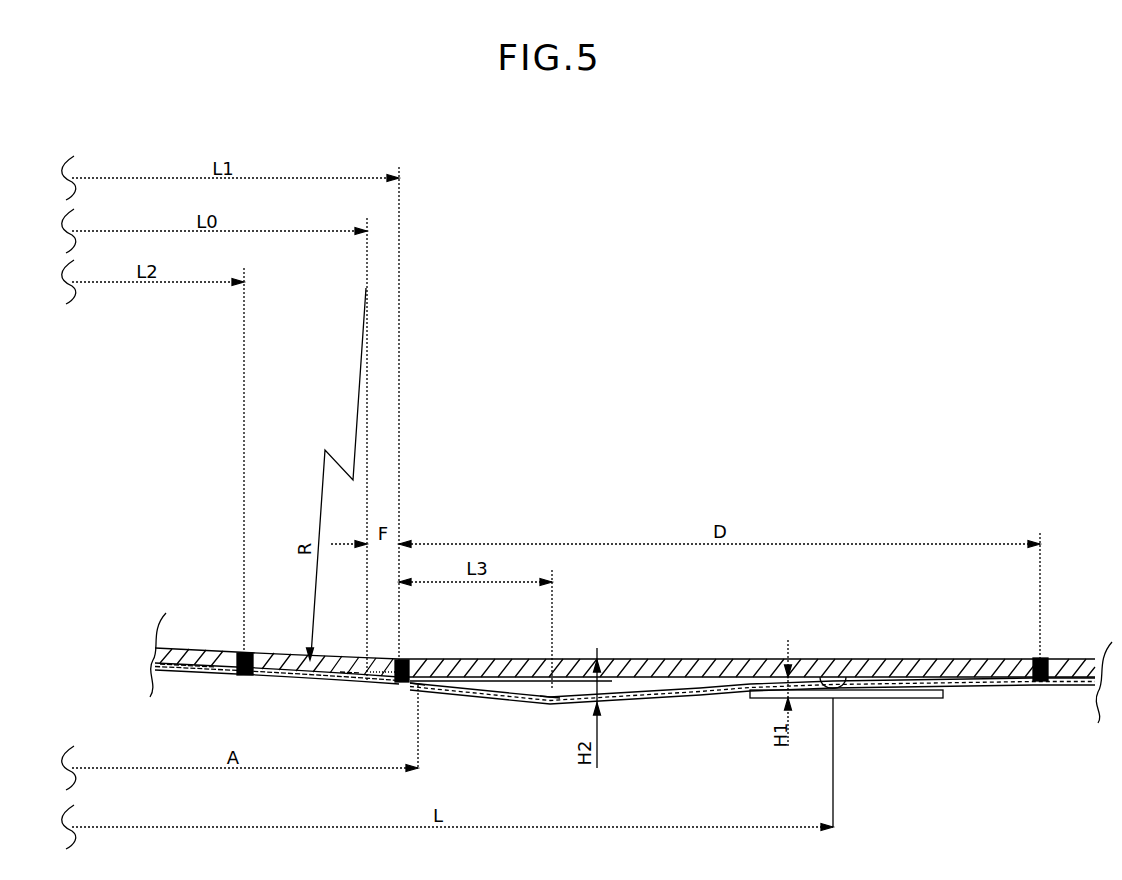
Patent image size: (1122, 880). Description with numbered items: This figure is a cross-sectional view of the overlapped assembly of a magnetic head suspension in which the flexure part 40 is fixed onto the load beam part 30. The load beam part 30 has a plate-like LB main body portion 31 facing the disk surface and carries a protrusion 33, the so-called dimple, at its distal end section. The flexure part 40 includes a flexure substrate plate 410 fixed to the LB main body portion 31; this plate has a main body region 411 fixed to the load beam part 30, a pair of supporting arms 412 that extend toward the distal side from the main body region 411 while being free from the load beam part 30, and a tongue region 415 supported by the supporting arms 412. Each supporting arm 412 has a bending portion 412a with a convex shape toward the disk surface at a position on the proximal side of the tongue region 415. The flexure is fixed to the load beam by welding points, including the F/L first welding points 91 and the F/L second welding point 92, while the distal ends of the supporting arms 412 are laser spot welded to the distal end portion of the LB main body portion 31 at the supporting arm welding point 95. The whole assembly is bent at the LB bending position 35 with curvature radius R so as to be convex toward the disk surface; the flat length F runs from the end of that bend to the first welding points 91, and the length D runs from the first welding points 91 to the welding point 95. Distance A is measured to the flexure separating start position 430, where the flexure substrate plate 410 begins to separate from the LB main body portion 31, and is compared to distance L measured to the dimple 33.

The load beam part 30 is at (632, 660).
The LB main body portion 31 is at (272, 658).
The protrusion 33 is at (831, 680).
The LB bending position 35 is at (370, 672).
The flexure part 40 is at (351, 682).
The F/L first welding points 91 is at (406, 660).
The F/L second welding point 92 is at (241, 653).
The supporting arm welding point 95 is at (1045, 658).
The flexure substrate plate 410 is at (283, 681).
The main body region 411 is at (213, 677).
The supporting arms 412 is at (648, 696).
The bending portion 412a is at (552, 704).
The tongue region 415 is at (888, 698).
The flexure separating start position 430 is at (425, 684).